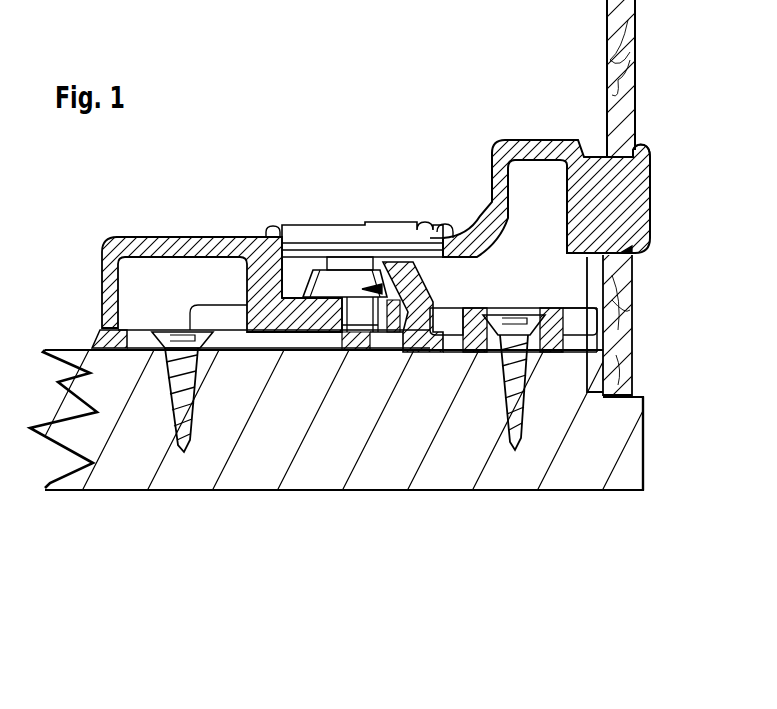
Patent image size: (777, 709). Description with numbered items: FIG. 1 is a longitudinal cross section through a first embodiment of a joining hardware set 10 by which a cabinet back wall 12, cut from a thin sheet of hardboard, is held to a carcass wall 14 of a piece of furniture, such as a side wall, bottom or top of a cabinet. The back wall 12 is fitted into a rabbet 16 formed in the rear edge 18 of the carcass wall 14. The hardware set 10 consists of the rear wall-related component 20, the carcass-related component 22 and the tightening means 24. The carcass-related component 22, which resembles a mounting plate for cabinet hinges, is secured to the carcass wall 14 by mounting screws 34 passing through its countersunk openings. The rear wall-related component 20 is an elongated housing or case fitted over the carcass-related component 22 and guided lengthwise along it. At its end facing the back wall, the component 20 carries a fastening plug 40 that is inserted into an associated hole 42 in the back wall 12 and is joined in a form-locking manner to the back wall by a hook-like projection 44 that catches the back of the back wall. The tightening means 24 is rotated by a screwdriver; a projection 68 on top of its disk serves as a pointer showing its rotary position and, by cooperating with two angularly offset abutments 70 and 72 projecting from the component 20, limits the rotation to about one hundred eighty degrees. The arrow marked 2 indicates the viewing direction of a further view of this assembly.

The section line 2 is at (362, 32).
The joining hardware set 10 is at (218, 188).
The back wall 12 is at (628, 18).
The carcass wall 14 is at (372, 480).
The rabbet 16 is at (632, 390).
The rear edge 18 is at (645, 420).
The rear wall-related component 20 is at (145, 225).
The carcass-related component 22 is at (480, 295).
The tightening means 24 is at (307, 215).
The mounting screws 34 is at (167, 455).
The fastening plug 40 is at (648, 182).
The hole 42 is at (645, 248).
The hook-like projection 44 is at (641, 149).
The projection 68 is at (393, 224).
The abutment 70 is at (448, 224).
The abutment 72 is at (272, 223).